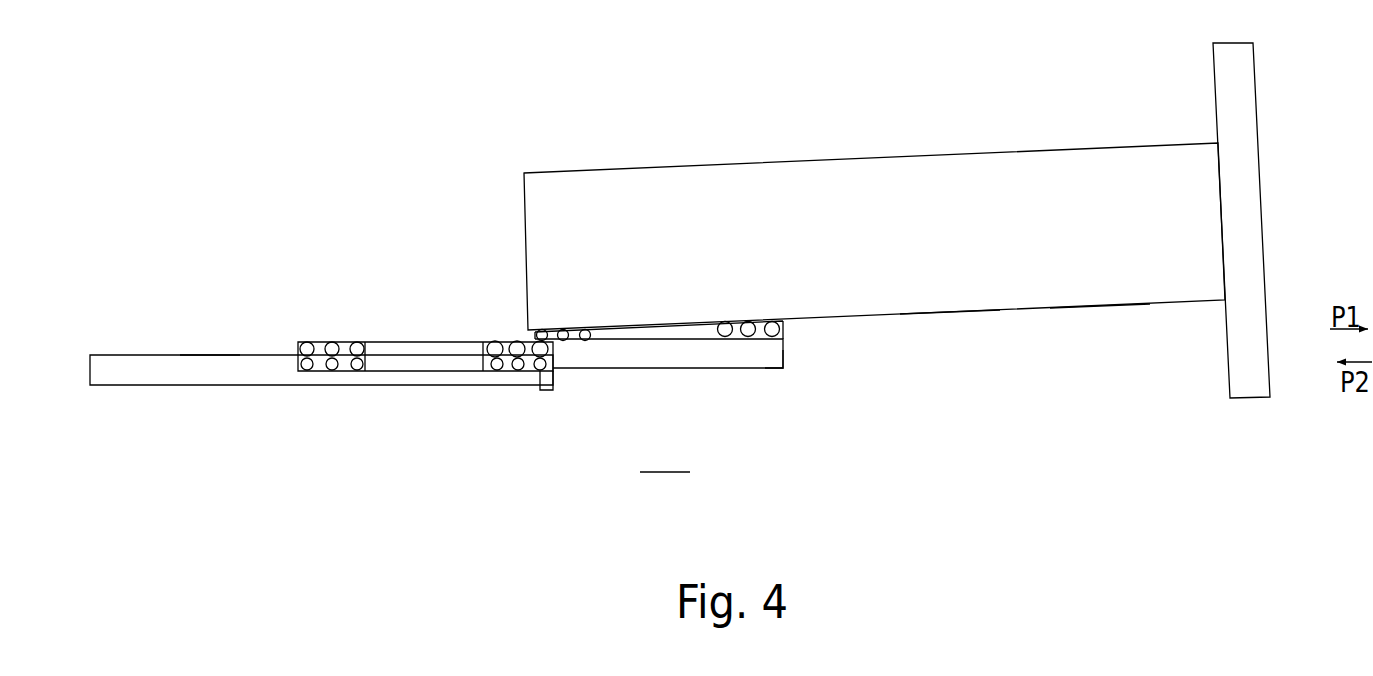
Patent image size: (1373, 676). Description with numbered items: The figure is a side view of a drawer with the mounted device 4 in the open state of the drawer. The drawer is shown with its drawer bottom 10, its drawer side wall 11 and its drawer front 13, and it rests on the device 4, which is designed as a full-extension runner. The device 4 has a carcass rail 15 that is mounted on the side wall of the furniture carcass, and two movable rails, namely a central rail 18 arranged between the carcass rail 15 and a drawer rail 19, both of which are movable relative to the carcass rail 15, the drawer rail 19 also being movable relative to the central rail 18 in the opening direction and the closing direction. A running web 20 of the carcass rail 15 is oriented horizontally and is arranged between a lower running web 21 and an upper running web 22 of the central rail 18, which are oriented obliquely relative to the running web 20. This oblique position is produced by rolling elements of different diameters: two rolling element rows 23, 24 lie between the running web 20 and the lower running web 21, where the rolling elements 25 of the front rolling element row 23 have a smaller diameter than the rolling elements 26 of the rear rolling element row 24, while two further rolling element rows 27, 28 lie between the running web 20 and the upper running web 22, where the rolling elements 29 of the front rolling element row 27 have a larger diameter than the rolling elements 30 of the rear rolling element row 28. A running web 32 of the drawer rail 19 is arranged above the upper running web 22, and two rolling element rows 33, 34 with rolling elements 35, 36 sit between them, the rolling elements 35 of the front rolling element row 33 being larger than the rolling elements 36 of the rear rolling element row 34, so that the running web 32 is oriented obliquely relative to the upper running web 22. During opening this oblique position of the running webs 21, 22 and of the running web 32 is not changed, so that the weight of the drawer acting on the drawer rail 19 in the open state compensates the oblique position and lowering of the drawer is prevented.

The device 4 is at (657, 474).
The drawer bottom 10 is at (1093, 308).
The drawer side wall 11 is at (917, 219).
The drawer front 13 is at (1238, 102).
The carcass rail 15 is at (87, 390).
The central rail 18 is at (787, 373).
The drawer rail 19 is at (947, 315).
The running web 20 is at (207, 354).
The lower running web 21 is at (668, 369).
The upper running web 22 is at (421, 342).
The rolling element row 23 is at (517, 378).
The rolling element row 24 is at (319, 380).
The rolling elements 25 is at (548, 390).
The rolling elements 26 is at (368, 373).
The rolling element row 27 is at (487, 336).
The rolling element row 28 is at (319, 338).
The rolling elements 29 is at (520, 340).
The rolling elements 30 is at (357, 342).
The running web 32 is at (660, 324).
The rolling element row 33 is at (750, 319).
The rolling element row 34 is at (563, 326).
The rolling elements 35 is at (773, 322).
The rolling elements 36 is at (585, 330).